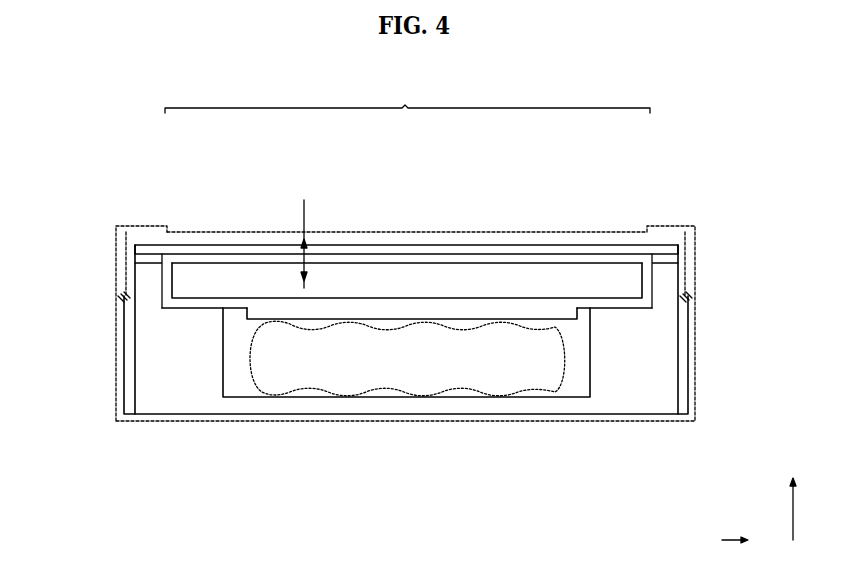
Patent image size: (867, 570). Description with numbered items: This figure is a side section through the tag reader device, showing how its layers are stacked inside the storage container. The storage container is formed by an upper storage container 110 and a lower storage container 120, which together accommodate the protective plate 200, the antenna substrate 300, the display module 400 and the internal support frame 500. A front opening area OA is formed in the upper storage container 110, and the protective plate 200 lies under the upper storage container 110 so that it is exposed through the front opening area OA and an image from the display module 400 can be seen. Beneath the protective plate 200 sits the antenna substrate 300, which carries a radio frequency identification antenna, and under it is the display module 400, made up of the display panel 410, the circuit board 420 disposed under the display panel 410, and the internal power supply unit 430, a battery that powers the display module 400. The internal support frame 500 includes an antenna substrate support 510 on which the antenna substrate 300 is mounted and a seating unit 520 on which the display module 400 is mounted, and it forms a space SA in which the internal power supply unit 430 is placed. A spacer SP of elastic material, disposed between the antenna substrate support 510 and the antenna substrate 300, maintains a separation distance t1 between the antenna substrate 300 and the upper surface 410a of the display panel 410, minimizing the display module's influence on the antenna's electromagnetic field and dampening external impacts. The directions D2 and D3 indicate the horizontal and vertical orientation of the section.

The upper storage container 110 is at (697, 229).
The lower storage container 120 is at (694, 357).
The protective plate 200 is at (190, 232).
The antenna substrate 300 is at (583, 247).
The display module 400 is at (407, 260).
The display panel 410 is at (502, 278).
The upper surface 410a is at (248, 262).
The circuit board 420 is at (436, 312).
The internal power supply unit 430 is at (364, 346).
The internal support frame 500 is at (642, 368).
The antenna substrate support 510 is at (185, 310).
The seating unit 520 is at (132, 277).
The space SA is at (240, 371).
The spacer SP is at (672, 258).
The front opening area OA is at (407, 95).
The separation distance t1 is at (302, 229).
The second direction D2 is at (718, 538).
The third direction D3 is at (795, 493).